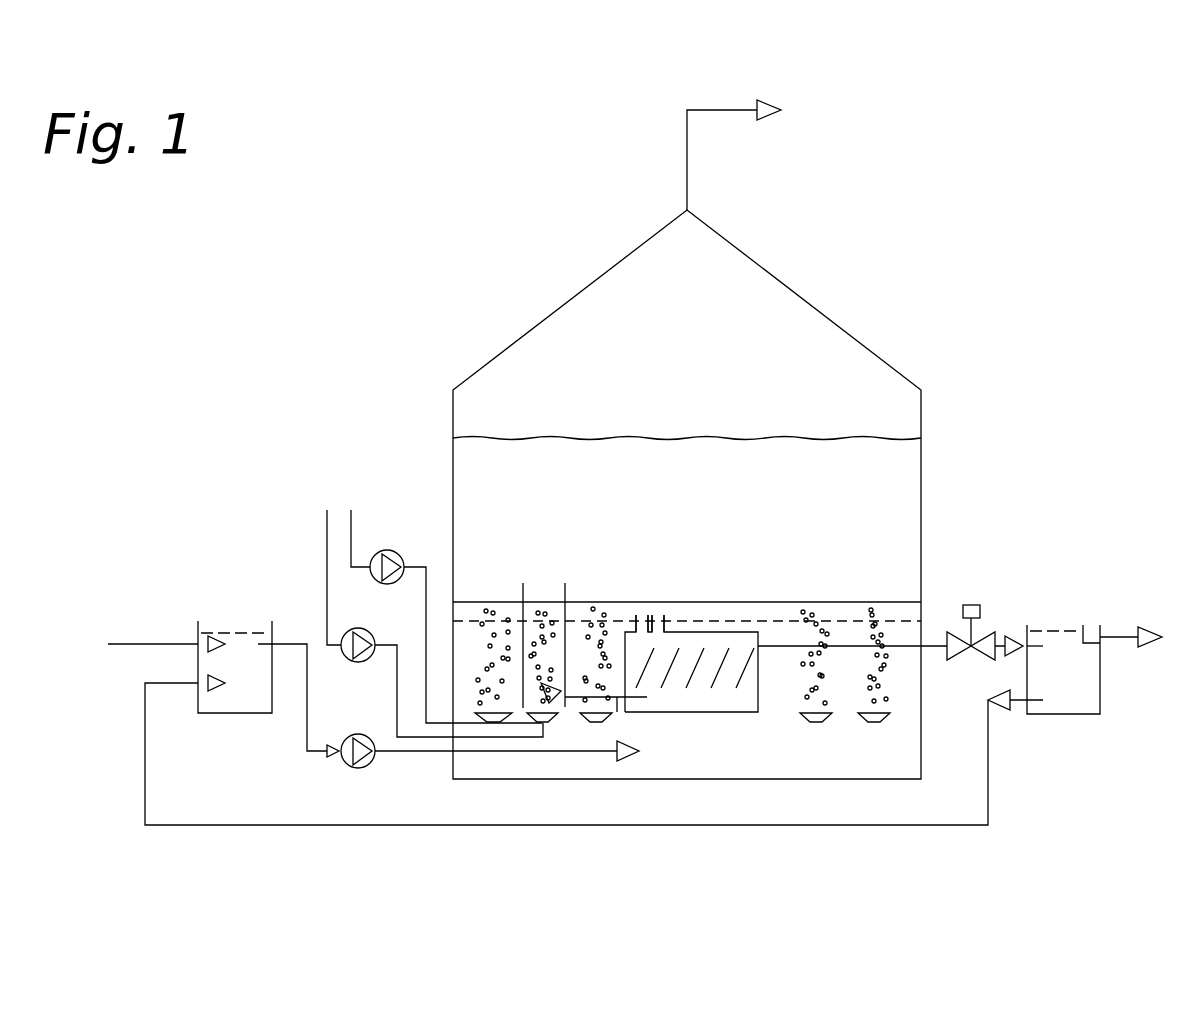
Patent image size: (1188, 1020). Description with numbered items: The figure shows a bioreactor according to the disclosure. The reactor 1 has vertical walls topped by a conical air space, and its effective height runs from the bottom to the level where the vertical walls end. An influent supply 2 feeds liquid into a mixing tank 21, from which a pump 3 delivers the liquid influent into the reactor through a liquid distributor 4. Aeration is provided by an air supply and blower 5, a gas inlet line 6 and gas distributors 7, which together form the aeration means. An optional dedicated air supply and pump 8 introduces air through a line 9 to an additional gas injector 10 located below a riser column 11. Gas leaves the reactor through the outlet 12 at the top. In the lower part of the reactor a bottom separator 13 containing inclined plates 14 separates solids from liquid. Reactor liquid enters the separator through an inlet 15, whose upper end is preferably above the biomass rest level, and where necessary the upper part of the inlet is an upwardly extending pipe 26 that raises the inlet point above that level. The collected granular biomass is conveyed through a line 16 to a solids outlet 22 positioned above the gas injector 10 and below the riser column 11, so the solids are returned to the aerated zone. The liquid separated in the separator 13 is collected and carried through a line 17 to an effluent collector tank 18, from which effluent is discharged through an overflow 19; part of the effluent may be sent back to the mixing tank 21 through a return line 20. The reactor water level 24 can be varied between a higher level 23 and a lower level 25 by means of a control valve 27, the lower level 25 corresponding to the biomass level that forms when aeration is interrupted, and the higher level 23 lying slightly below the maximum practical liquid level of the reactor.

The reactor 1 is at (465, 462).
The influent supply 2 is at (140, 643).
The pump 3 is at (362, 768).
The liquid distributor 4 is at (557, 752).
The air supply and blower 5 is at (394, 552).
The gas inlet line 6 is at (426, 618).
The gas distributors 7 is at (822, 720).
The dedicated air supply and pump 8 is at (343, 636).
The line 9 is at (397, 700).
The additional gas injector 10 is at (530, 722).
The riser column 11 is at (566, 610).
The outlet 12 is at (728, 110).
The bottom separator 13 is at (713, 632).
The inclined plates 14 is at (712, 685).
The inlet 15 is at (654, 630).
The line 16 is at (617, 712).
The line 17 is at (933, 646).
The effluent collector tank 18 is at (1100, 695).
The overflow 19 is at (1116, 636).
The return line 20 is at (540, 826).
The mixing tank 21 is at (240, 713).
The solids outlet 22 is at (555, 697).
The higher level 23 is at (700, 437).
The reactor water level 24 is at (770, 602).
The lower level 25 is at (788, 621).
The upwardly extending pipe 26 is at (640, 628).
The control valve 27 is at (983, 643).